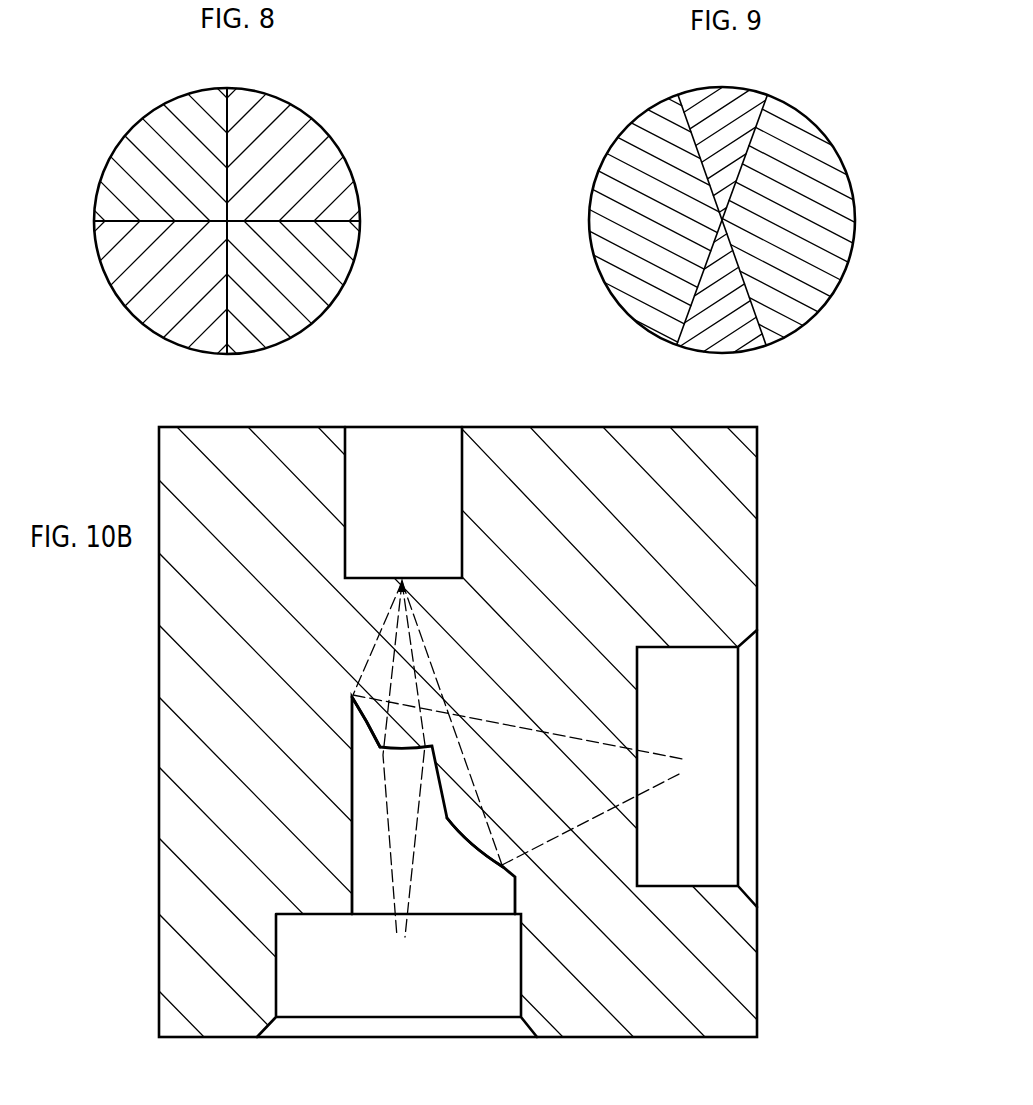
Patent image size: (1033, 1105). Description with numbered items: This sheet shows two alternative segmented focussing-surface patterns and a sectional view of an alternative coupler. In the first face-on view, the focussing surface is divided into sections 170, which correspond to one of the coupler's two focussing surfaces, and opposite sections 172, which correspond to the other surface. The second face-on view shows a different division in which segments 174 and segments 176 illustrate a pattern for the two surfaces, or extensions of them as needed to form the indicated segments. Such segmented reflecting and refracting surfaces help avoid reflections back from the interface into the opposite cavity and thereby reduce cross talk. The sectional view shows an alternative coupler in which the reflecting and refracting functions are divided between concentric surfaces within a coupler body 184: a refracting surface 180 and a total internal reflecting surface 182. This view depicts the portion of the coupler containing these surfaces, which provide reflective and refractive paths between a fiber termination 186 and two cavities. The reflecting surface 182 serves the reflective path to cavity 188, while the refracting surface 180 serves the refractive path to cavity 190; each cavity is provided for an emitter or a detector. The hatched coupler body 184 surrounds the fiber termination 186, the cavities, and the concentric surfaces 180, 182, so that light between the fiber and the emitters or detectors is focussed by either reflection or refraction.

In FIG. 8, the sections 170 is at (305, 143).
In FIG. 8, the opposite sections 172 is at (145, 142).
In FIG. 9, the segments 174 is at (717, 98).
In FIG. 9, the segments 176 is at (608, 220).
In FIG. 10B, the refracting surface 180 is at (407, 752).
In FIG. 10B, the reflecting surface 182 is at (380, 747).
In FIG. 10B, the coupler body 184 is at (178, 835).
In FIG. 10B, the fiber termination 186 is at (403, 577).
In FIG. 10B, the cavity 188 is at (712, 805).
In FIG. 10B, the cavity 190 is at (375, 995).